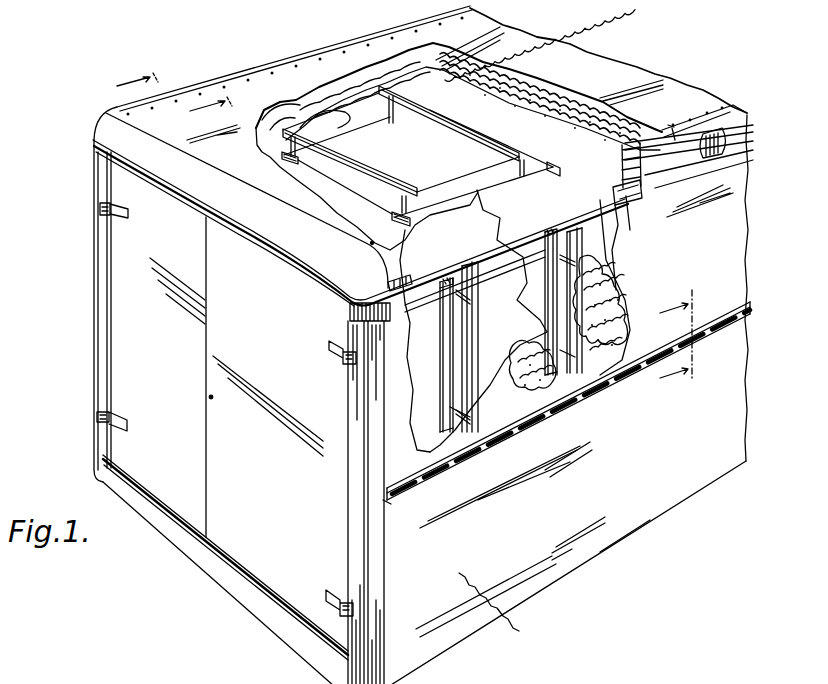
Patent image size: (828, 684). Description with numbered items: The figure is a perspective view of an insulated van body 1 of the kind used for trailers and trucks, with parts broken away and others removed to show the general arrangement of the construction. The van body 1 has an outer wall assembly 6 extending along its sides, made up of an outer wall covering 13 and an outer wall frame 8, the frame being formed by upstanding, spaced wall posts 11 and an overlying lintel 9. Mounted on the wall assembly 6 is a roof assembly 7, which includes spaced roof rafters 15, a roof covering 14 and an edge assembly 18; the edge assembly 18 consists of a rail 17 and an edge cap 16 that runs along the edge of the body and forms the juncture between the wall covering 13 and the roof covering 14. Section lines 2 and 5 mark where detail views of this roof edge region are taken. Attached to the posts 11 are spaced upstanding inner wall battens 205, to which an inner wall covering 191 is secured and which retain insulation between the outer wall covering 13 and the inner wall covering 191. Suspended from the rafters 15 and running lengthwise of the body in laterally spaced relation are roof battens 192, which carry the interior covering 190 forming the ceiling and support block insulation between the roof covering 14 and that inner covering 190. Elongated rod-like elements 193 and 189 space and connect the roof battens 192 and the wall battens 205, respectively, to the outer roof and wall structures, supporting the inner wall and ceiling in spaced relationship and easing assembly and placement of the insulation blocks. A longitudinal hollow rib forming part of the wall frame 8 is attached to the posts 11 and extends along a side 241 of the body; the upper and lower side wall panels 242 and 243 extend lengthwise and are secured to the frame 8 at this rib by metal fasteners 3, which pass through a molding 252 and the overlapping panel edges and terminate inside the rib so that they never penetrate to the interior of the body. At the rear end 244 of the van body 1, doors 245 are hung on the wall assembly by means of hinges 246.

The van body 1 is at (94, 393).
The section line 2 is at (401, 104).
The metal fasteners 3 is at (510, 435).
The hinge roller 5 is at (720, 108).
The outer wall assembly 6 is at (684, 514).
The roof assembly 7 is at (313, 52).
The outer wall frame 8 is at (592, 383).
The lintel 9 is at (633, 193).
The wall posts 11 is at (515, 321).
The outer wall covering 13 is at (636, 528).
The roof covering 14 is at (385, 30).
The roof rafters 15 is at (459, 146).
The edge cap 16 is at (687, 157).
The rail 17 is at (667, 183).
The edge assembly 18 is at (687, 120).
The rod-like elements 189 is at (560, 246).
The interior covering 190 is at (620, 184).
The inner wall covering 191 is at (618, 260).
The roof battens 192 is at (353, 143).
The rod-like elements 193 is at (263, 151).
The inner wall battens 205 is at (446, 323).
The side 241 is at (598, 553).
The upper side wall panel 242 is at (349, 392).
The lower side wall panel 243 is at (348, 541).
The rear end 244 is at (212, 578).
The doors 245 is at (198, 538).
The hinges 246 is at (146, 418).
The molding 252 is at (470, 456).